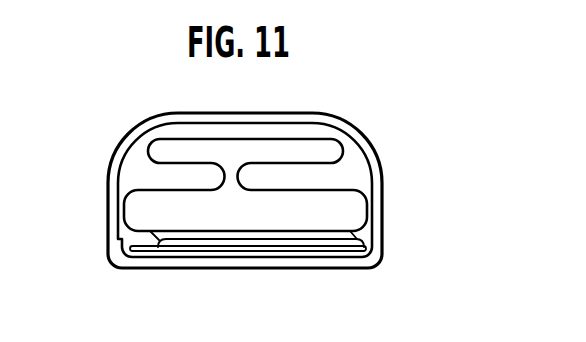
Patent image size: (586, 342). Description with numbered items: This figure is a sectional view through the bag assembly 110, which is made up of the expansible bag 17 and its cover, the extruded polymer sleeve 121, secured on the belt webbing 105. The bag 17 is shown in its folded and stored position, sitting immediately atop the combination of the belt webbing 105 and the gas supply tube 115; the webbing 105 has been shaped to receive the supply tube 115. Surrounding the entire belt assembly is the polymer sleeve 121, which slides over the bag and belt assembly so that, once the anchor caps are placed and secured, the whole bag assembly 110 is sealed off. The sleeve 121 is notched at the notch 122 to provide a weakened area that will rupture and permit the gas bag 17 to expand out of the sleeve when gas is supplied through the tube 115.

The bag assembly 110 is at (240, 177).
The extruded polymer sleeve 121 is at (130, 130).
The notch 122 is at (115, 237).
The expansible bag 17 is at (357, 203).
The gas supply tube 115 is at (333, 245).
The belt webbing 105 is at (159, 242).